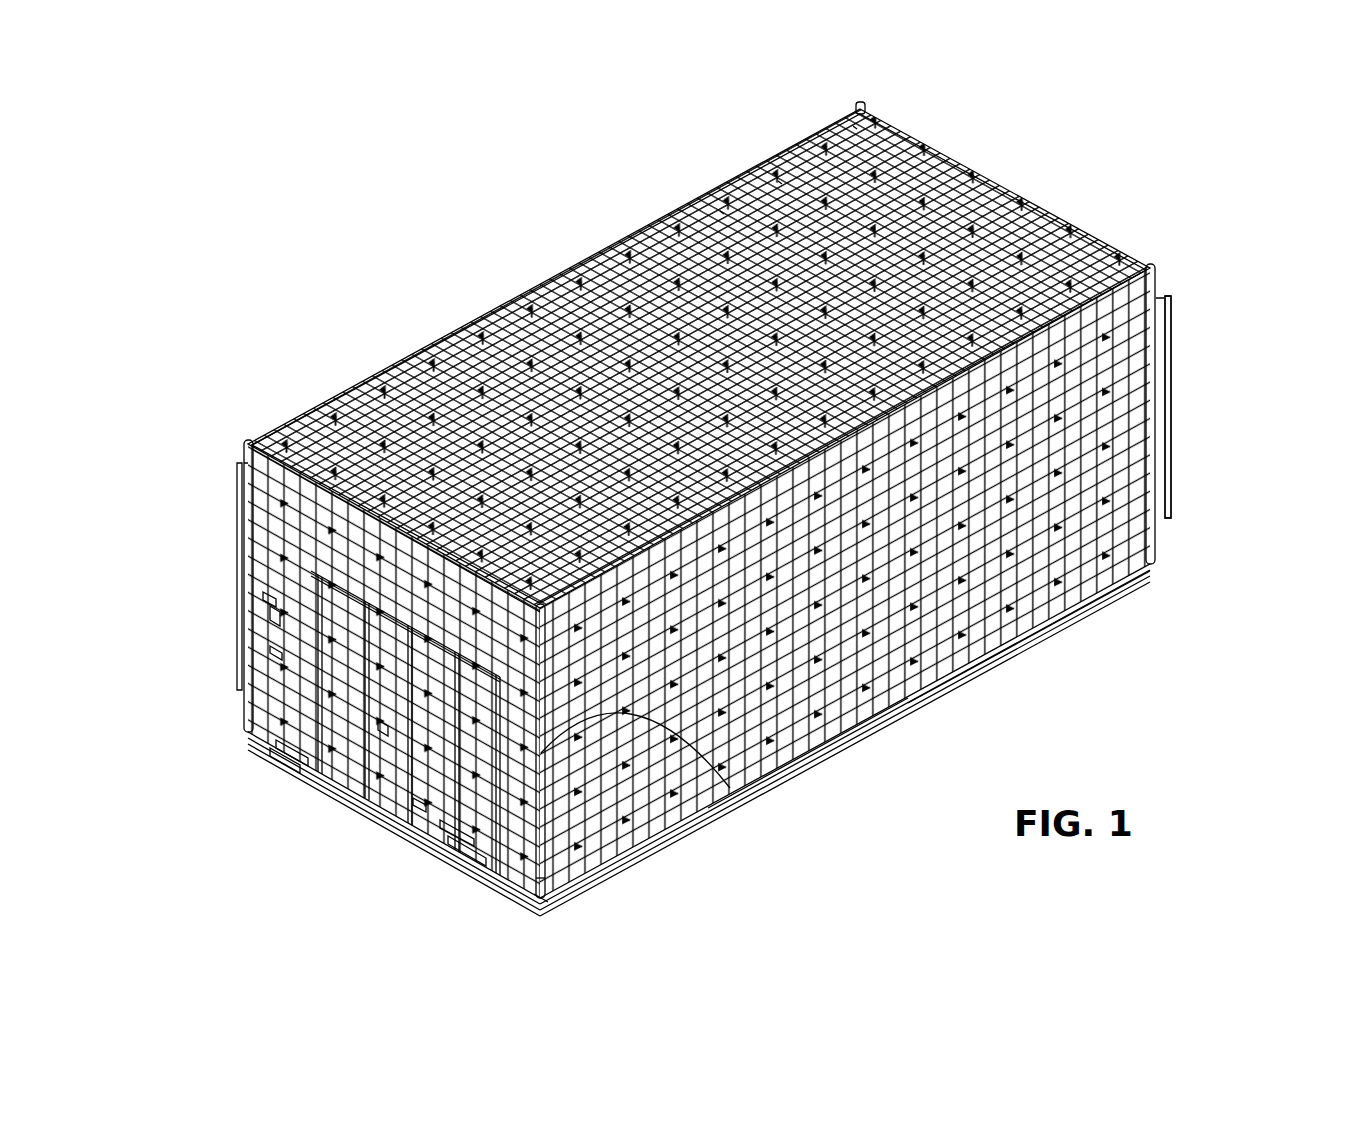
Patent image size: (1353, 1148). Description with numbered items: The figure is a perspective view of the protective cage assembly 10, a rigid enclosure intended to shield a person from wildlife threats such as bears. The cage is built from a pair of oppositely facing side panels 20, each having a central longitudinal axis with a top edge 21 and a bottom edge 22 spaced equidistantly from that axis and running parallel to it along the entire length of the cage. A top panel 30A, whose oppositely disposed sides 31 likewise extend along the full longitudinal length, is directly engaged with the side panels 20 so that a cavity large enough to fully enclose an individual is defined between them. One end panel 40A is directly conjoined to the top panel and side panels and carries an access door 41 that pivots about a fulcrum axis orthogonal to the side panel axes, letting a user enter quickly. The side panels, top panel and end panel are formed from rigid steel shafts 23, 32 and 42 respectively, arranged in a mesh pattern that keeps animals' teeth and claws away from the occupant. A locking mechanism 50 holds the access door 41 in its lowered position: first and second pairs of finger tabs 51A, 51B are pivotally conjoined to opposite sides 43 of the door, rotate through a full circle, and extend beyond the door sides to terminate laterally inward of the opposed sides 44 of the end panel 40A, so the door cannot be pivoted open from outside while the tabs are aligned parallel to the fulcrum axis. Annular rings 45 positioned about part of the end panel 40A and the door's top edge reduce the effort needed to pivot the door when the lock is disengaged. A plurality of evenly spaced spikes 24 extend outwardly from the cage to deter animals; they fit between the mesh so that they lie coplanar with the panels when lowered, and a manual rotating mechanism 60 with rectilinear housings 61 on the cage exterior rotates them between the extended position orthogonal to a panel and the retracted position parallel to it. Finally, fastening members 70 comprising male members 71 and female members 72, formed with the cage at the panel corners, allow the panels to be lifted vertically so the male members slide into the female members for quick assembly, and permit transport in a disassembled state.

The assembly 10 is at (338, 158).
The side panels 20 is at (1148, 560).
The top edge 21 is at (1160, 292).
The bottom edge 22 is at (990, 658).
The rigid steel shafts 23 is at (884, 660).
The spikes 24 is at (770, 175).
The top panel 30A is at (938, 132).
The sides 31 is at (520, 284).
The rigid steel shafts 32 is at (392, 360).
The end panel 40A is at (272, 760).
The access door 41 is at (385, 812).
The rigid steel shafts 42 is at (300, 548).
The sides of the access door 43 is at (262, 642).
The opposed sides of the end panel 44 is at (255, 588).
The annular rings 45 is at (262, 603).
The locking mechanism 50 is at (280, 738).
The first pair of finger tabs 51A is at (285, 722).
The second pair of finger tabs 51B is at (480, 830).
The manual rotating mechanism 60 is at (1080, 262).
The rectilinear housings 61 is at (998, 296).
The fastening members 70 is at (860, 96).
The male members 71 is at (527, 878).
The female members 72 is at (545, 892).